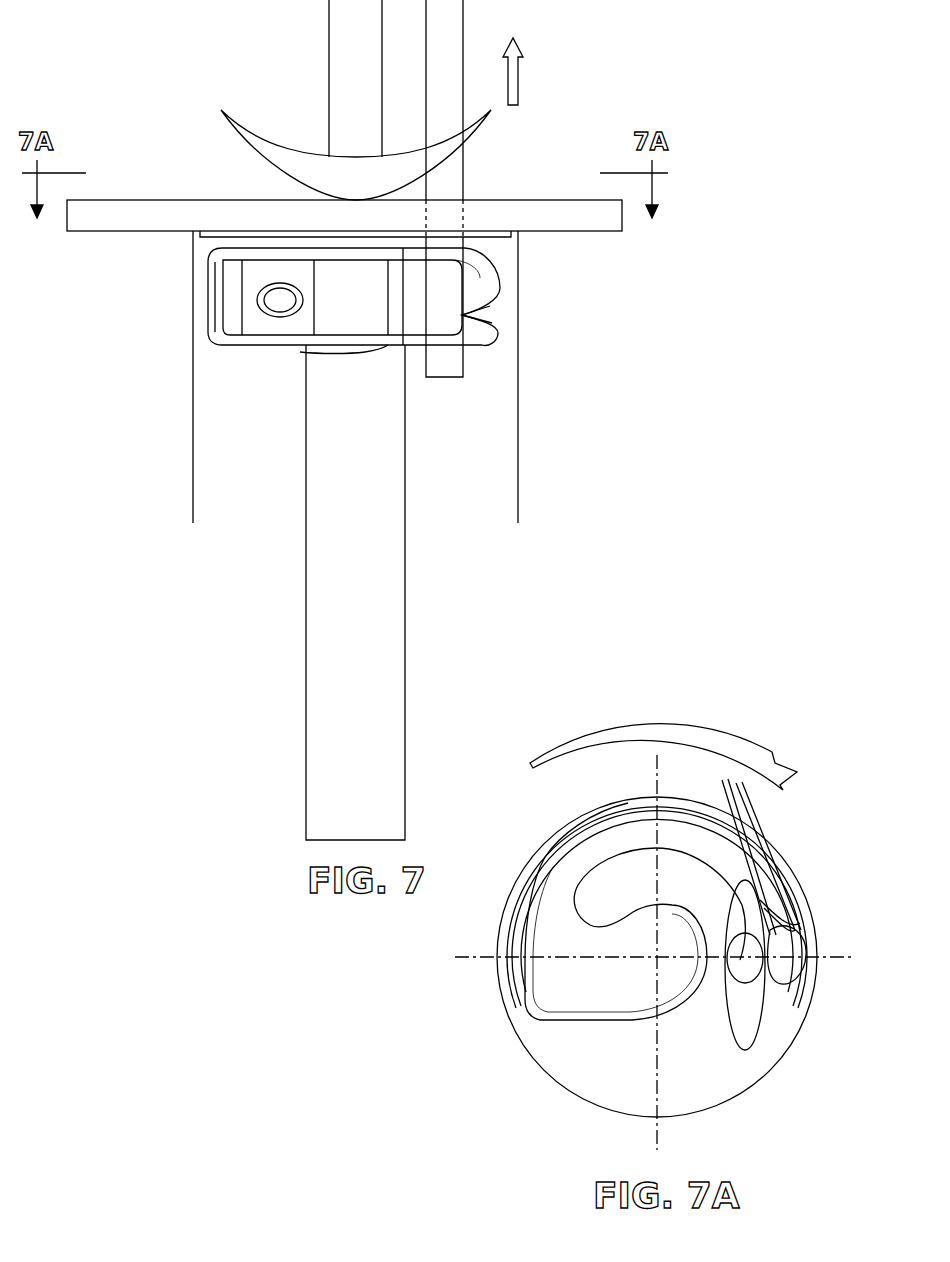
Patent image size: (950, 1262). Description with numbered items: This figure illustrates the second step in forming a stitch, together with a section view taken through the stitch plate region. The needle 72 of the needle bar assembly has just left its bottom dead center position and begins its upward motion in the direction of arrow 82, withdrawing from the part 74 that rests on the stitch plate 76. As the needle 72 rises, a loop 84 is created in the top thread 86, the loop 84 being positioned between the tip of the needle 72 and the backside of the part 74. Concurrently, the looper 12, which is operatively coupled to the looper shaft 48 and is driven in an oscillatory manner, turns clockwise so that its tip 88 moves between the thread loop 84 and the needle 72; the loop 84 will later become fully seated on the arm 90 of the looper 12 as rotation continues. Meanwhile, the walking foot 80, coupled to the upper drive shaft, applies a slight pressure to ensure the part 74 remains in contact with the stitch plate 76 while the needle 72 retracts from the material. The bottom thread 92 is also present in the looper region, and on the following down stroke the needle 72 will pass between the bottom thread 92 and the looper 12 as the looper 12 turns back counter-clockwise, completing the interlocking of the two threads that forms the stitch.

In FIG. 7, the looper 12 is at (240, 348).
In FIG. 7A, the looper 12 is at (538, 1004).
In FIG. 7, the looper shaft 48 is at (366, 603).
In FIG. 7, the needle 72 is at (463, 185).
In FIG. 7A, the needle 72 is at (747, 983).
In FIG. 7, the part 74 is at (107, 212).
In FIG. 7, the stitch plate 76 is at (533, 238).
In FIG. 7A, the stitch plate 76 is at (725, 1073).
In FIG. 7, the walking foot 80 is at (268, 137).
In FIG. 7, the arrow 82 is at (518, 80).
In FIG. 7A, the loop 84 is at (770, 902).
In FIG. 7A, the top thread 86 is at (740, 787).
In FIG. 7, the tip 88 is at (488, 312).
In FIG. 7A, the tip 88 is at (793, 977).
In FIG. 7A, the arm 90 is at (540, 890).
In FIG. 7A, the bottom thread 92 is at (722, 790).